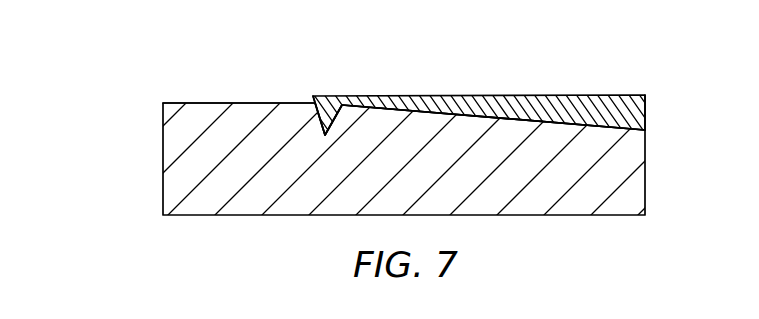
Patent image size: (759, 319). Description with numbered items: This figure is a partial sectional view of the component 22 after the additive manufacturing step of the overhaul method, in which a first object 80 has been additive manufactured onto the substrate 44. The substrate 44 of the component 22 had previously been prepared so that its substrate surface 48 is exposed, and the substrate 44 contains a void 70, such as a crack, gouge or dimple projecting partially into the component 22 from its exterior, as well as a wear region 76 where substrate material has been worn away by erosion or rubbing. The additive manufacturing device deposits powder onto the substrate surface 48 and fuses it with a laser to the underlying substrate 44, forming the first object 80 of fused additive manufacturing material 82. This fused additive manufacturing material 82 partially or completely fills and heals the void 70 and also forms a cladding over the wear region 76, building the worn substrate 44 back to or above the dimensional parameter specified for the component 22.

The component 22 is at (407, 112).
The substrate 44 is at (162, 170).
The substrate surface 48 is at (240, 103).
The void 70 is at (337, 117).
The wear region 76 is at (539, 130).
The first object 80 is at (638, 82).
The fused additive manufacturing material 82 is at (645, 113).